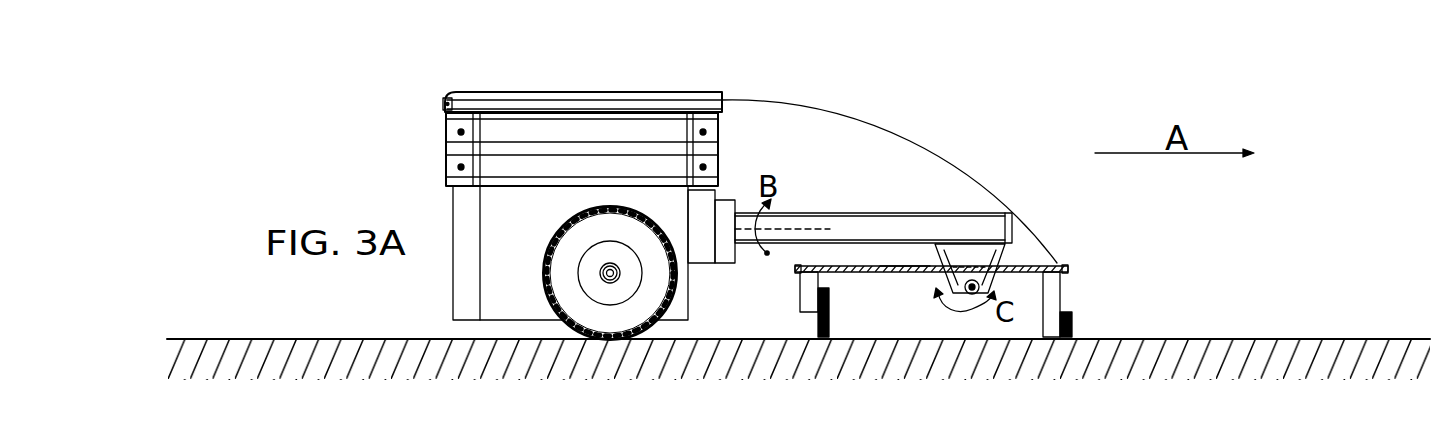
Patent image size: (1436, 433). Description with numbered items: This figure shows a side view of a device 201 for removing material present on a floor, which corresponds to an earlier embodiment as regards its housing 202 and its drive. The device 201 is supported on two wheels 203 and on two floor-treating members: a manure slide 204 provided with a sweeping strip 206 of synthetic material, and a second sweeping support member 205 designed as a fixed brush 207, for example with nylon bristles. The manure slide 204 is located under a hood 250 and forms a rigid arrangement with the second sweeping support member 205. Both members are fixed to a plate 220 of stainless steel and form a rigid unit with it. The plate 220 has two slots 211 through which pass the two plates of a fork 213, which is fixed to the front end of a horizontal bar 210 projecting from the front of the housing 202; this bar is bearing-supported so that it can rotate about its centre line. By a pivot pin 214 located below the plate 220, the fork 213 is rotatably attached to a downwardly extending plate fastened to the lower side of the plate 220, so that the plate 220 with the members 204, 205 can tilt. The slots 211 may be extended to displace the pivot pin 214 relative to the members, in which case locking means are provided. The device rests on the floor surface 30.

The device 201 is at (430, 148).
The housing 202 is at (550, 233).
The wheels 203 is at (566, 285).
The manure slide 204 is at (1053, 297).
The second sweeping support member 205 is at (812, 293).
The sweeping strip 206 is at (1073, 321).
The fixed brush 207 is at (818, 323).
The horizontal bar 210 is at (878, 230).
The slots 211 is at (906, 269).
The fork 213 is at (991, 252).
The pivot pin 214 is at (947, 293).
The plate 220 is at (1017, 269).
The hood 250 is at (892, 131).
The ground surface 30 is at (1195, 339).